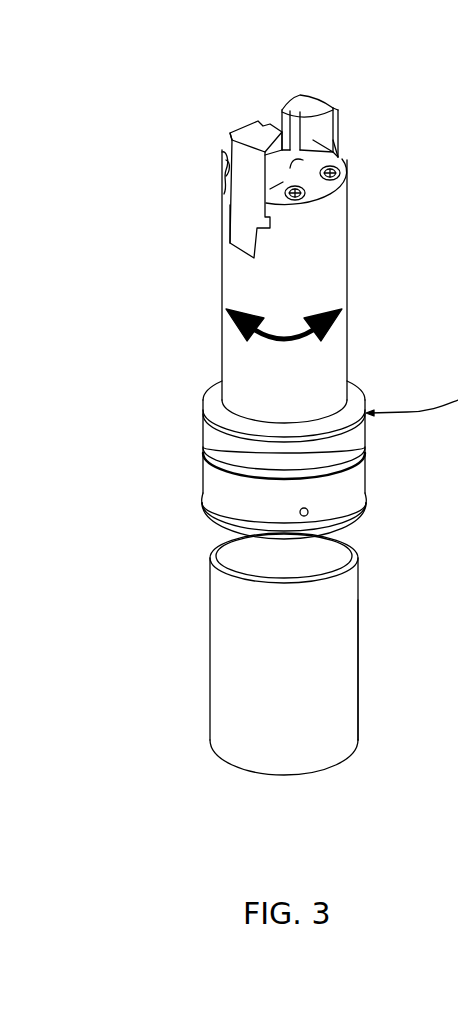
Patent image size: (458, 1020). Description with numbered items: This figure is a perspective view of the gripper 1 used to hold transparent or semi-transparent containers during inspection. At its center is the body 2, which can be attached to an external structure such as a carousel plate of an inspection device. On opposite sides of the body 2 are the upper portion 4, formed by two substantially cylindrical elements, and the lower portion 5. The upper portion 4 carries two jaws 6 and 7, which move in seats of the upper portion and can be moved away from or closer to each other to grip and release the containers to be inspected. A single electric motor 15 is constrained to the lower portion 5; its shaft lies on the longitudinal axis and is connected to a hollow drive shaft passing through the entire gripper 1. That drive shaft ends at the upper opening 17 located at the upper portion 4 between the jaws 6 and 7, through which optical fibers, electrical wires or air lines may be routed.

The gripper 1 is at (221, 83).
The body 2 is at (204, 467).
The upper portion 4 is at (221, 339).
The lower portion 5 is at (211, 672).
The jaw 6 is at (238, 200).
The jaw 7 is at (330, 132).
The electric motor 15 is at (320, 670).
The upper opening 17 is at (301, 168).